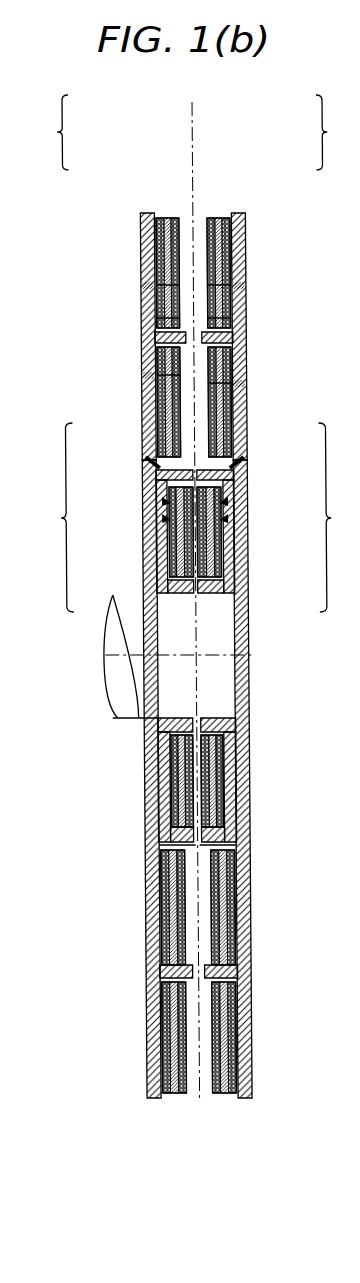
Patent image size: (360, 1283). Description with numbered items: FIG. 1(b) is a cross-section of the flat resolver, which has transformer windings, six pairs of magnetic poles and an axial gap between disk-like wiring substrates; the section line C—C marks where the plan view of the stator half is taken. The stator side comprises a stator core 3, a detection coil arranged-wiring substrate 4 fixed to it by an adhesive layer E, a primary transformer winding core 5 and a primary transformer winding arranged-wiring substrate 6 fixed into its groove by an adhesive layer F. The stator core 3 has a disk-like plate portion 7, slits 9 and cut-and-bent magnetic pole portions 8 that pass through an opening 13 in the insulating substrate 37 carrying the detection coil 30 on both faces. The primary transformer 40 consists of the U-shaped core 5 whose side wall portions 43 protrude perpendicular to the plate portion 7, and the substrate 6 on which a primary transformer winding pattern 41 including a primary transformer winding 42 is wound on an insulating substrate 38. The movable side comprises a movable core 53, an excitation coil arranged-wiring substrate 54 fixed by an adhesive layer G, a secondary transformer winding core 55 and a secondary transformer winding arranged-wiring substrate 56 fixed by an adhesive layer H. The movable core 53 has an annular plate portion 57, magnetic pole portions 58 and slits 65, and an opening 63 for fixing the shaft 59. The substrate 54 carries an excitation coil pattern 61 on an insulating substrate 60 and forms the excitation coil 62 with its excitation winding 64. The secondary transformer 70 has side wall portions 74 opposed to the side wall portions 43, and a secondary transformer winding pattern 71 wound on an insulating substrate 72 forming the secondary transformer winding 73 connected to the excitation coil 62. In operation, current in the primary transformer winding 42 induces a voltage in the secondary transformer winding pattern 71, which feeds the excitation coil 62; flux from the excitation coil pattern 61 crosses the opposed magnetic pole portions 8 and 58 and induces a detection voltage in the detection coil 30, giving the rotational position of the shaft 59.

The stator core 3 is at (244, 213).
The detection coil arranged-wiring substrate 4 is at (331, 132).
The primary transformer winding core 5 is at (243, 459).
The primary transformer winding arranged-wiring substrate 6 is at (231, 476).
The plate portion 7 is at (243, 262).
The magnetic pole portions 8 is at (231, 317).
The slits 9 is at (232, 288).
The opening 13 is at (238, 345).
The detection coil 30 is at (211, 213).
The insulating substrate 37 is at (217, 213).
The insulating substrate 38 is at (219, 522).
The primary transformer 40 is at (337, 517).
The primary transformer winding pattern 41 is at (221, 502).
The primary transformer winding 42 is at (217, 551).
The side wall portions 43 is at (236, 596).
The movable core 53 is at (140, 213).
The excitation coil arranged-wiring substrate 54 is at (51, 132).
The secondary transformer winding core 55 is at (141, 459).
The secondary transformer winding arranged-wiring substrate 56 is at (153, 476).
The plate portion 57 is at (141, 262).
The magnetic pole portions 58 is at (153, 317).
The shaft 59 is at (133, 720).
The insulating substrate 60 is at (167, 213).
The excitation coil pattern 61 is at (146, 340).
The excitation coil 62 is at (173, 213).
The opening 63 is at (152, 734).
The excitation winding 64 is at (146, 392).
The slits 65 is at (152, 288).
The secondary transformer 70 is at (51, 517).
The secondary transformer winding pattern 71 is at (163, 502).
The insulating substrate 72 is at (165, 522).
The secondary transformer winding 73 is at (167, 551).
The side wall portions 74 is at (148, 596).
The line C— C is at (192, 102).
The adhesive layer E is at (229, 213).
The adhesive layer F is at (215, 575).
The adhesive layer G is at (155, 213).
The adhesive layer H is at (169, 575).